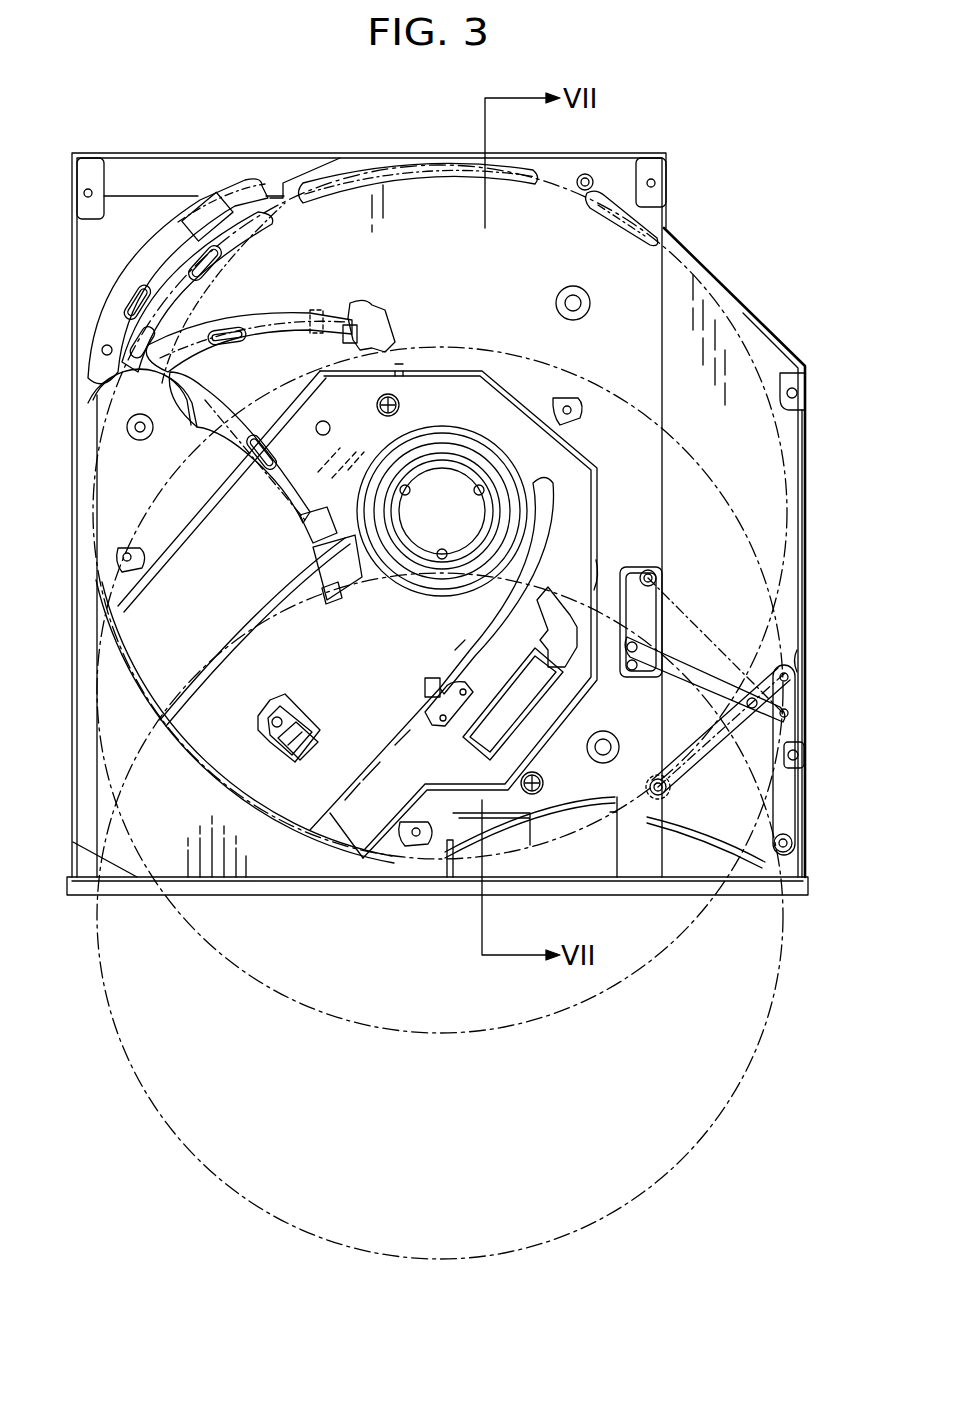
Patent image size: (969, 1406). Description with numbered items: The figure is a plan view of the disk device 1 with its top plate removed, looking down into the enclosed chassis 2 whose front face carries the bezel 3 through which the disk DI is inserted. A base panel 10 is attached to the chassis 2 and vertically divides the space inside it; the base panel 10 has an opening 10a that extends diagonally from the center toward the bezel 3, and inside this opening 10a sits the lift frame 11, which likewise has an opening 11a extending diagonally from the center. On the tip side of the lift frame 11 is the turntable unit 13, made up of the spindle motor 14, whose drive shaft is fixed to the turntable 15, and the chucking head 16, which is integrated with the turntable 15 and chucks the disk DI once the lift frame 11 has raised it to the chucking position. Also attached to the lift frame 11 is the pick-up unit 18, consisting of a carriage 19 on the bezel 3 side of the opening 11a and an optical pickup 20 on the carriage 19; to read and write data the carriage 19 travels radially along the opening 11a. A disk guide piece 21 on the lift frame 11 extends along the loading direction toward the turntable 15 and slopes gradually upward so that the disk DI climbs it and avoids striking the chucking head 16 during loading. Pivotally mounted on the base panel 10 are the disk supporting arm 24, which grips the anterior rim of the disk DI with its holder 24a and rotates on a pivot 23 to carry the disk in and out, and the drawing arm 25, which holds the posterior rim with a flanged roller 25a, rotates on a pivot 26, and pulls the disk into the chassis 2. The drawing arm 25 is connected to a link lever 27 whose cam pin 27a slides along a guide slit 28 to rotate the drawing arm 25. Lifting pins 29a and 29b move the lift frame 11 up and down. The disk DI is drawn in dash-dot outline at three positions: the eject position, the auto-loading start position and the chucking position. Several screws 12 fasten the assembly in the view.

The disk device 1 is at (716, 238).
The chassis 2 is at (808, 578).
The bezel 3 is at (284, 897).
The base panel 10 is at (423, 193).
The opening 10a is at (606, 548).
The lift frame 11 is at (572, 480).
The opening 11a is at (272, 592).
The screw 12 is at (575, 402).
The turntable unit 13 is at (420, 418).
The spindle motor 14 is at (484, 440).
The turntable 15 is at (458, 455).
The chucking head 16 is at (458, 488).
The pick-up unit 18 is at (270, 690).
The carriage 19 is at (345, 733).
The optical pickup 20 is at (280, 707).
The disk guide piece 21 is at (445, 660).
The pivot 23 is at (128, 427).
The disk supporting arm 24 is at (160, 248).
The holder 24a is at (306, 575).
The drawing arm 25 is at (706, 740).
The flanged roller 25a is at (664, 792).
The pivot 26 is at (800, 662).
The link lever 27 is at (702, 632).
The cam pin 27a is at (660, 578).
The guide slit 28 is at (640, 570).
The lifting pin 29a is at (400, 370).
The lifting pin 29b is at (590, 592).
The disk DI is at (748, 326).